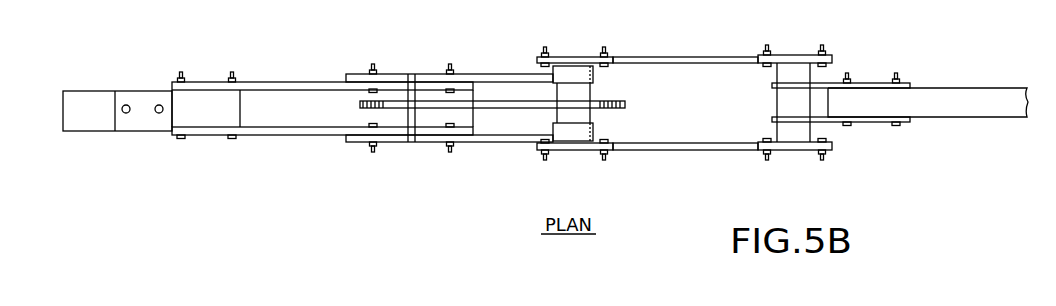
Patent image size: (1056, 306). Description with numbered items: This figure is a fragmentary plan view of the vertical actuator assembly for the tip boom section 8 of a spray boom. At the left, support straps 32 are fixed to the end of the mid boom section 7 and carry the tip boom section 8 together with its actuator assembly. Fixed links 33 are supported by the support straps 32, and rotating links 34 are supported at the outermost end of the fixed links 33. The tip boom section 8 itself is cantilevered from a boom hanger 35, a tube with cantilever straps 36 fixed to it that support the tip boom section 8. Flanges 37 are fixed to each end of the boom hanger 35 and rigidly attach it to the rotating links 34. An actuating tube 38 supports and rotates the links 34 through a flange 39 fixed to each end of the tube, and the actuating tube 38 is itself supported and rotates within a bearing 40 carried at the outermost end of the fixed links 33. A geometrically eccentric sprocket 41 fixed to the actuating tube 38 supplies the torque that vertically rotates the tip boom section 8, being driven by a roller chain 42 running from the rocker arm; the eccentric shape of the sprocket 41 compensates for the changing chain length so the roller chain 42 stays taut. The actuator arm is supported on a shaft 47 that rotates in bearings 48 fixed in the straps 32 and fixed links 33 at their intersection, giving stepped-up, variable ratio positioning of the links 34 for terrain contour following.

The mid boom section 7 is at (83, 91).
The tip boom section 8 is at (975, 88).
The support straps 32 is at (283, 82).
The fixed links 33 is at (508, 73).
The rotating links 34 is at (668, 57).
The boom hanger 35 is at (777, 102).
The cantilever straps 36 is at (869, 83).
The flanges 37 is at (791, 55).
The actuating tube 38 is at (591, 94).
The flange 39 is at (567, 57).
The bearing 40 is at (580, 70).
The geometrically eccentric sprocket 41 is at (621, 108).
The roller chain 42 is at (530, 101).
The shaft 47 is at (408, 82).
The bearings 48 is at (415, 82).